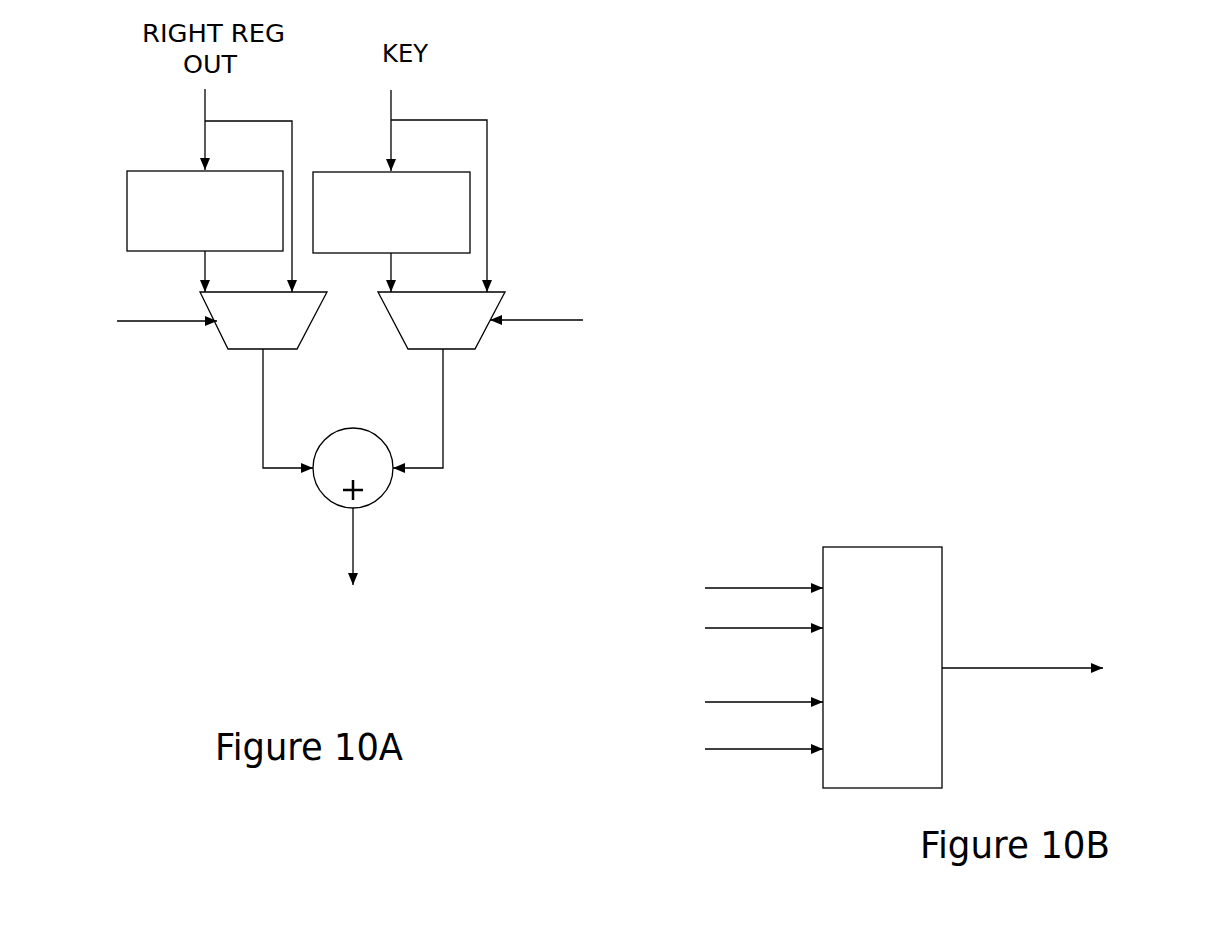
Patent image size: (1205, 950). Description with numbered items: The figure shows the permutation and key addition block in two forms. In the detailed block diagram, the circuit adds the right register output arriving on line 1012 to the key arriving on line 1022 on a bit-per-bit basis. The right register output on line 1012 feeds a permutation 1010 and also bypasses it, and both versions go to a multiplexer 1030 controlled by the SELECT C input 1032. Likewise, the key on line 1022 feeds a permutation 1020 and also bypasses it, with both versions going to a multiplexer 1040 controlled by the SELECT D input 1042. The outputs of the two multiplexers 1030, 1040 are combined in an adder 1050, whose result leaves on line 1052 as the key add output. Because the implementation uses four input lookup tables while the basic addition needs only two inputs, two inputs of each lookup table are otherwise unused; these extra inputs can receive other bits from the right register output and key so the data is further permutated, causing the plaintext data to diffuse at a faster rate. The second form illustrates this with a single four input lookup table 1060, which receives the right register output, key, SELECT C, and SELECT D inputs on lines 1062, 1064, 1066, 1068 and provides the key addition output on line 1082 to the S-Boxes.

In FIG. 10A, the permutation 1010 is at (205, 231).
In FIG. 10A, the right register output line 1012 is at (212, 190).
In FIG. 10A, the permutation 1020 is at (391, 232).
In FIG. 10A, the key line 1022 is at (404, 191).
In FIG. 10A, the multiplexer 1030 is at (263, 380).
In FIG. 10A, the SELECT C input 1032 is at (152, 319).
In FIG. 10A, the multiplexer 1040 is at (441, 380).
In FIG. 10A, the SELECT D input 1042 is at (556, 320).
In FIG. 10A, the adder 1050 is at (353, 468).
In FIG. 10A, the key add output line 1052 is at (321, 575).
In FIG. 10B, the lookup table 1060 is at (882, 667).
In FIG. 10B, the right register output line 1062 is at (689, 588).
In FIG. 10B, the key line 1064 is at (725, 647).
In FIG. 10B, the SELECT C line 1066 is at (691, 711).
In FIG. 10B, the SELECT D line 1068 is at (691, 758).
In FIG. 10B, the key addition output line 1082 is at (1050, 670).